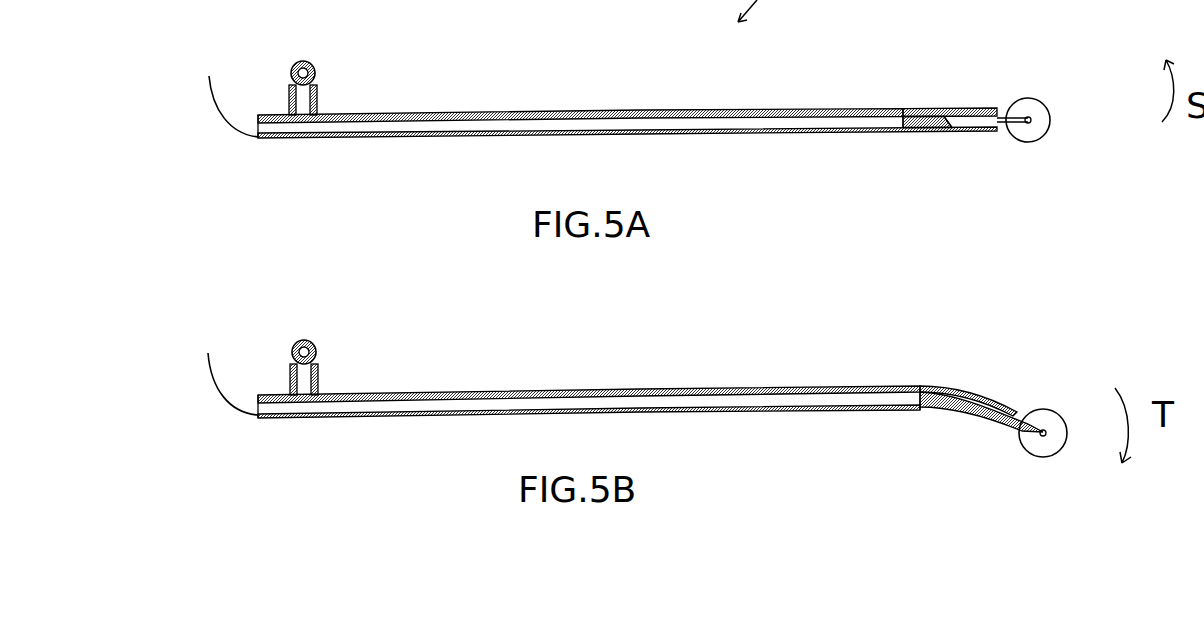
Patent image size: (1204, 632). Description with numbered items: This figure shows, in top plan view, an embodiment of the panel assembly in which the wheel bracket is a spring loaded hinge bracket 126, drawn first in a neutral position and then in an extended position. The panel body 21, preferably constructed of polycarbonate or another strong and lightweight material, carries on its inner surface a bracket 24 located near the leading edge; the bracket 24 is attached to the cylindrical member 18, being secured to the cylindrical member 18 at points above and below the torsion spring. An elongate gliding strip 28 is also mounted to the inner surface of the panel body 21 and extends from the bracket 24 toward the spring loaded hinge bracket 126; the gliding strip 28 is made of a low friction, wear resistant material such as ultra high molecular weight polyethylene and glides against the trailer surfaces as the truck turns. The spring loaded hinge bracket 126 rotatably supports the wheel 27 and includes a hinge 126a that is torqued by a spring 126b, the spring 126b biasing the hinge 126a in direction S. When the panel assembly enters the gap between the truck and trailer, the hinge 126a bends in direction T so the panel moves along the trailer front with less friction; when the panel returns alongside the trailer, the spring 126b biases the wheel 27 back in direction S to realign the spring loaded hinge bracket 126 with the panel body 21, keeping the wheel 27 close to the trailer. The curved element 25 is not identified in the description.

In FIG. 5A, the cylindrical member 18 is at (315, 68).
In FIG. 5B, the cylindrical member 18 is at (317, 342).
In FIG. 5A, the panel body 21 is at (495, 133).
In FIG. 5A, the bracket 24 is at (318, 97).
In FIG. 5B, the bracket 24 is at (320, 373).
In FIG. 5A, the guide curve 25 is at (212, 103).
In FIG. 5A, the wheel 27 is at (1047, 103).
In FIG. 5B, the wheel 27 is at (1048, 415).
In FIG. 5A, the gliding strip 28 is at (522, 112).
In FIG. 5A, the spring-loaded hinge bracket 126 is at (983, 128).
In FIG. 5A, the hinge 126a is at (938, 141).
In FIG. 5A, the spring 126b is at (940, 116).